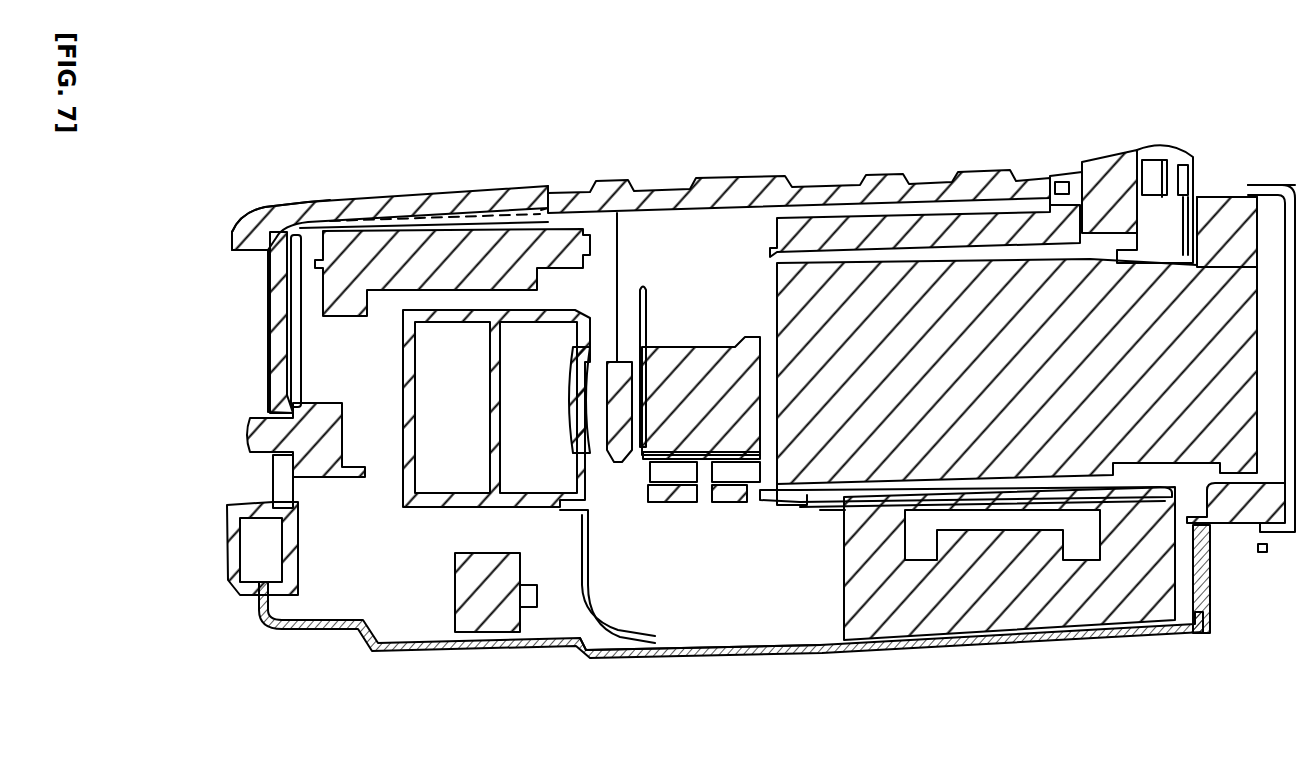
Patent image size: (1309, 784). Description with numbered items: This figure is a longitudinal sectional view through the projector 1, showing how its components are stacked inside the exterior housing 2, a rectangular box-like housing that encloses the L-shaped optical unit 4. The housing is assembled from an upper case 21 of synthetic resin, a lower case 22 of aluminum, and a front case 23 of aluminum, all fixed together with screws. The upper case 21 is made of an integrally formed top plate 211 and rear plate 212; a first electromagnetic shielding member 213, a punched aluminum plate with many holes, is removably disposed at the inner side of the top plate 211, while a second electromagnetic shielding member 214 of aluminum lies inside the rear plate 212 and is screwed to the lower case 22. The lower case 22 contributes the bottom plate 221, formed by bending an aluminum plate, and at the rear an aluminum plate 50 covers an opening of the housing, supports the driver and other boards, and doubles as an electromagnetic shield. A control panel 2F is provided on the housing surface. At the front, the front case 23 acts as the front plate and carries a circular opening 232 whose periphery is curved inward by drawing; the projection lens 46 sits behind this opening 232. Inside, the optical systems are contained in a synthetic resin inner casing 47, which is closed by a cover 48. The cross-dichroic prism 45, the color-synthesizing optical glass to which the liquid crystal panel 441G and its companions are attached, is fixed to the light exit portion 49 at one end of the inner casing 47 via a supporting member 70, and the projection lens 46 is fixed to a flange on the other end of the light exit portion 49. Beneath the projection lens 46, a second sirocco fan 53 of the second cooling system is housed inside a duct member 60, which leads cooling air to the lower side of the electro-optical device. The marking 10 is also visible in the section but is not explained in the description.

The projector 1 is at (978, 126).
The exterior housing 2 is at (494, 186).
The control panel 2F is at (791, 176).
The optical unit 4 is at (730, 240).
The upper case 21 is at (400, 195).
The top plate 211 is at (325, 200).
The rear plate 212 is at (266, 290).
The first electromagnetic shielding member 213 is at (541, 205).
The second electromagnetic shielding member 214 is at (266, 272).
The lower case 22 is at (781, 654).
The bottom plate 221 is at (674, 655).
The front case 23 is at (1205, 585).
The circular opening 232 is at (1203, 190).
The liquid crystal panel 441G is at (600, 413).
The cross-dichroic prism 45 is at (700, 360).
The projection lens 46 is at (1221, 260).
The inner casing 47 is at (408, 494).
The cover 48 is at (400, 335).
The light exit portion 49 is at (765, 492).
The aluminum plate 50 is at (279, 334).
The second sirocco fan 53 is at (1015, 623).
The duct member 60 is at (583, 598).
The supporting member 70 is at (647, 453).
The element 10 is at (830, 534).